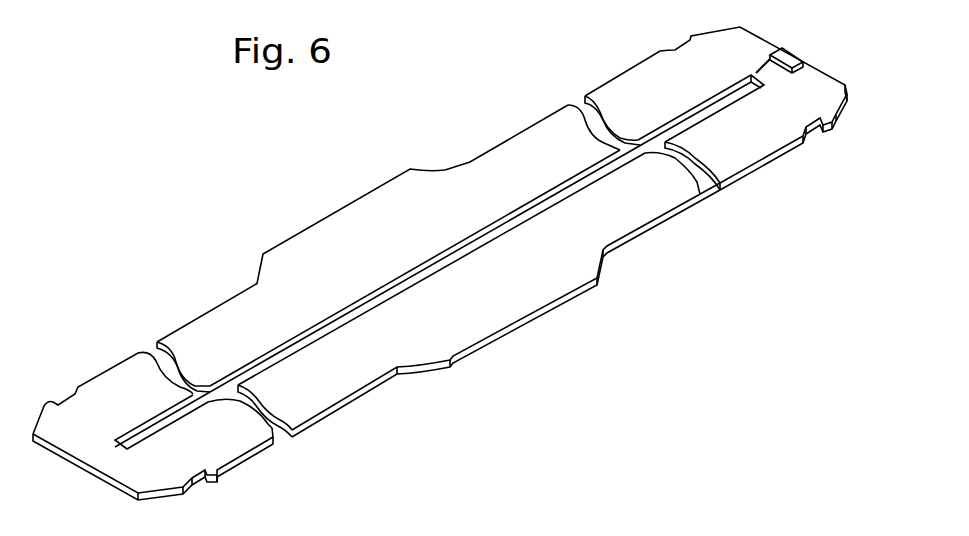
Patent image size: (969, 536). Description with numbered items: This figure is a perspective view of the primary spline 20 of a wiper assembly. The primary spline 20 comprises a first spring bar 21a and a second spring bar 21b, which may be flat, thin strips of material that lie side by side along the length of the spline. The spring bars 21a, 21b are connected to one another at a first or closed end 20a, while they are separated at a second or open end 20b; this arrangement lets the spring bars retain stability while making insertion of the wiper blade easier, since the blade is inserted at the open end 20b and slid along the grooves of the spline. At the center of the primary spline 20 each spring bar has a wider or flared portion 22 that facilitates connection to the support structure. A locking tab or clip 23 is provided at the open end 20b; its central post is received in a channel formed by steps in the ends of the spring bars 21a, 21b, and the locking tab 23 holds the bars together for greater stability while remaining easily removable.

The primary spline 20 is at (487, 127).
The closed end 20a is at (110, 460).
The open end 20b is at (810, 87).
The first spring bar 21a is at (256, 339).
The second spring bar 21b is at (323, 391).
The flared portion 22 is at (335, 227).
The locking tab 23 is at (793, 48).